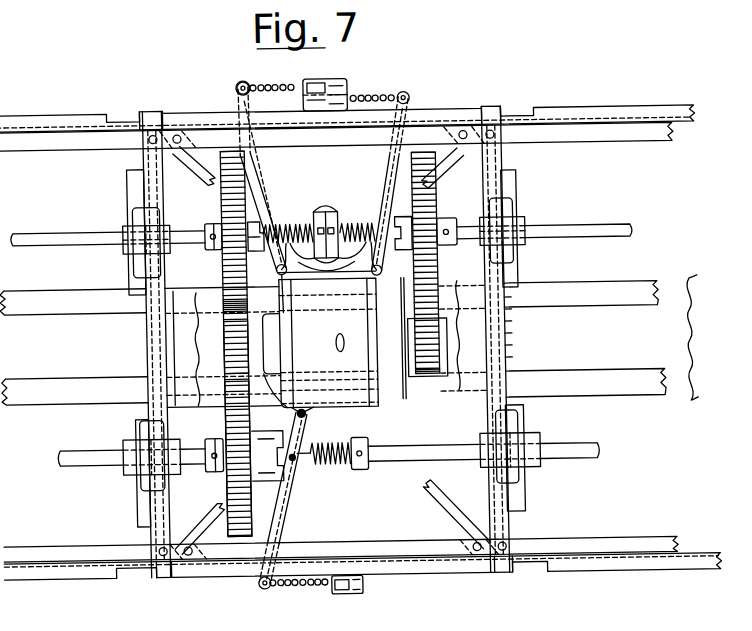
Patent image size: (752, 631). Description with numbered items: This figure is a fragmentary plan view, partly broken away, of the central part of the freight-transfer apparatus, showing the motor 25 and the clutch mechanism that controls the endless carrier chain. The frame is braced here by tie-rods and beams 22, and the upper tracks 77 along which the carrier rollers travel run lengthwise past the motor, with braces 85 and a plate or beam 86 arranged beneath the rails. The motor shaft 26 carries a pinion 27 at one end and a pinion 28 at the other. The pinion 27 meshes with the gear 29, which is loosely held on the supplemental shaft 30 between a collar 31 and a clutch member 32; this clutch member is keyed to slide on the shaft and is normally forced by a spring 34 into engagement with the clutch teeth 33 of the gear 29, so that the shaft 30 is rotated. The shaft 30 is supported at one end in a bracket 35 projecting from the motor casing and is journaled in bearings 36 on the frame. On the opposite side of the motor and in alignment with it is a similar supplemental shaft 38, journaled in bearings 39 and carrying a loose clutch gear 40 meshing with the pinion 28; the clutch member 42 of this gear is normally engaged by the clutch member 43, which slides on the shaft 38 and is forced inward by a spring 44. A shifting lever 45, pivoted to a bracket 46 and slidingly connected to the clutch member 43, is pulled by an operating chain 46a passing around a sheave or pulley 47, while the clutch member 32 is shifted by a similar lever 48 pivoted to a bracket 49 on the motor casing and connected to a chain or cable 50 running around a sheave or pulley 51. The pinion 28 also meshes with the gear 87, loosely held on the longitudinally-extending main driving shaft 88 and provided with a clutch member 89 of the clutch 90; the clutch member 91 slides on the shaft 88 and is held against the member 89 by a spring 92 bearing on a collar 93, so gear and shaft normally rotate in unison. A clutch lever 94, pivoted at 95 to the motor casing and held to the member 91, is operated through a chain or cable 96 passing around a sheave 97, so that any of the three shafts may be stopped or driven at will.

The tie-rods and beams 22 is at (205, 518).
The motor 25 is at (343, 348).
The motor shaft 26 is at (224, 348).
The pinion 27 is at (438, 408).
The pinion 28 is at (222, 392).
The gear 29 is at (440, 268).
The supplemental shaft 30 is at (575, 229).
The collar 31 is at (449, 220).
The clutch member 32 is at (400, 220).
The clutch teeth 33 is at (383, 271).
The spring 34 is at (352, 224).
The bracket 35 is at (330, 210).
The bearings 36 is at (515, 220).
The supplemental shaft 38 is at (35, 229).
The bearings 39 is at (125, 250).
The clutch gear 40 is at (222, 262).
The clutch member 42 is at (278, 271).
The clutch member 43 is at (272, 182).
The spring 44 is at (295, 228).
The shifting lever 45 is at (270, 157).
The bracket 46 is at (286, 318).
The operating chain 46a is at (270, 76).
The sheave or pulley 47 is at (322, 80).
The lever 48 is at (394, 157).
The bracket 49 is at (345, 258).
The chain or cable 50 is at (380, 95).
The sheave or pulley 51 is at (309, 98).
The upper tracks 77 is at (333, 344).
The braces 85 is at (508, 336).
The plate or beam 86 is at (657, 338).
The gear 87 is at (296, 414).
The main driving shaft 88 is at (392, 464).
The clutch member 89 is at (280, 522).
The clutch 90 is at (292, 490).
The clutch member 91 is at (300, 440).
The spring 92 is at (335, 466).
The collar 93 is at (360, 441).
The clutch lever 94 is at (258, 590).
The pivot 95 is at (288, 380).
The chain or cable 96 is at (283, 588).
The sheave 97 is at (330, 592).